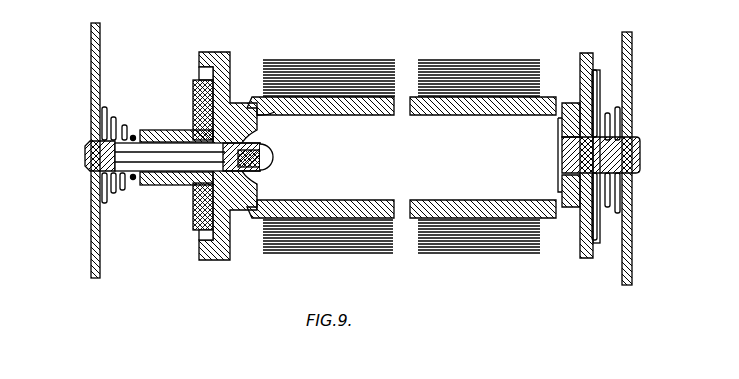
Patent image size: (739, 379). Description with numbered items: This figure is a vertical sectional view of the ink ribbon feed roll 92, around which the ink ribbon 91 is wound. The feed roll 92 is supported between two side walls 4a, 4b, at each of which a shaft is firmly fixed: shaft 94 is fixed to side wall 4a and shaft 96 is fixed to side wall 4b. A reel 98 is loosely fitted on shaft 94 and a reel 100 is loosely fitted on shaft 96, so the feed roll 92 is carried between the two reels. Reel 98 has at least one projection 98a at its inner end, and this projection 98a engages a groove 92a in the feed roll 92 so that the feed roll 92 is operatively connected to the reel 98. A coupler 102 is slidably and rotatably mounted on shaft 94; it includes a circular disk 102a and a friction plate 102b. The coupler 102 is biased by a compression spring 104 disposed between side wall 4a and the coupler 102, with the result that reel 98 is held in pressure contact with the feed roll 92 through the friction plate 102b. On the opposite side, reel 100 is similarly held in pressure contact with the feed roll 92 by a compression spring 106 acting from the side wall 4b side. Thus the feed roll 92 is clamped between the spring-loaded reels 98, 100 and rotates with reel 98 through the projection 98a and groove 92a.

The side wall 4a is at (96, 239).
The side wall 4b is at (631, 257).
The ink ribbon 91 is at (460, 60).
The ink ribbon feed roll 92 is at (372, 116).
The groove 92a is at (268, 140).
The shaft 94 is at (88, 157).
The shaft 96 is at (640, 153).
The reel 98 is at (229, 262).
The projection 98a is at (274, 112).
The reel 100 is at (592, 259).
The coupler 102 is at (187, 214).
The circular disk 102a is at (193, 92).
The friction plate 102b is at (207, 92).
The compression spring 104 is at (127, 103).
The compression spring 106 is at (617, 103).